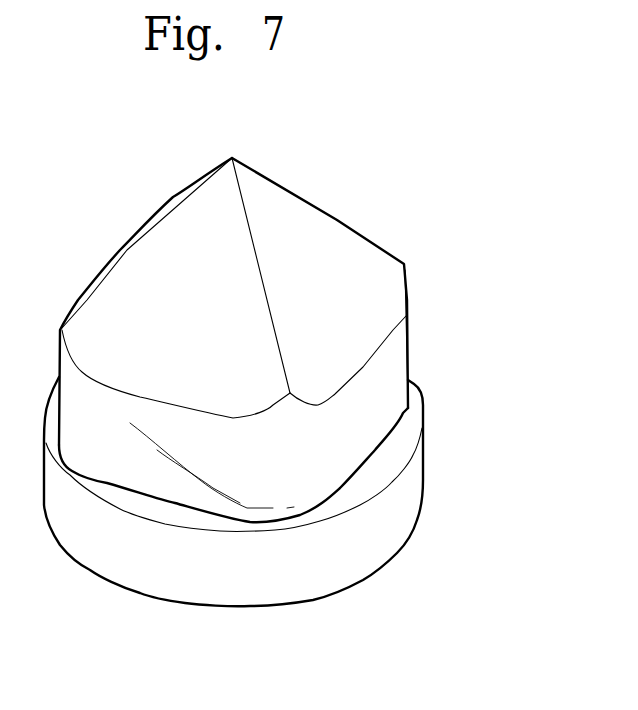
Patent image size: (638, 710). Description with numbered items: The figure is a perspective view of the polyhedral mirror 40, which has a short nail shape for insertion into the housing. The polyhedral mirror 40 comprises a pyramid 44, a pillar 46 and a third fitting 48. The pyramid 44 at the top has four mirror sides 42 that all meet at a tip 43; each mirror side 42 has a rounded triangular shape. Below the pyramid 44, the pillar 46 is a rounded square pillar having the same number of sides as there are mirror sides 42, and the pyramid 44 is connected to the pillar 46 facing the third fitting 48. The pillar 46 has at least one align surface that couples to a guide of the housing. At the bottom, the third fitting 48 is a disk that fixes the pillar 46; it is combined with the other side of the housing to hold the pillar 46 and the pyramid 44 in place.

The polyhedral mirror 40 is at (148, 201).
The mirror side 42 is at (332, 238).
The tip 43 is at (232, 158).
The pyramid 44 is at (160, 278).
The pillar 46 is at (409, 342).
The third fitting 48 is at (413, 485).